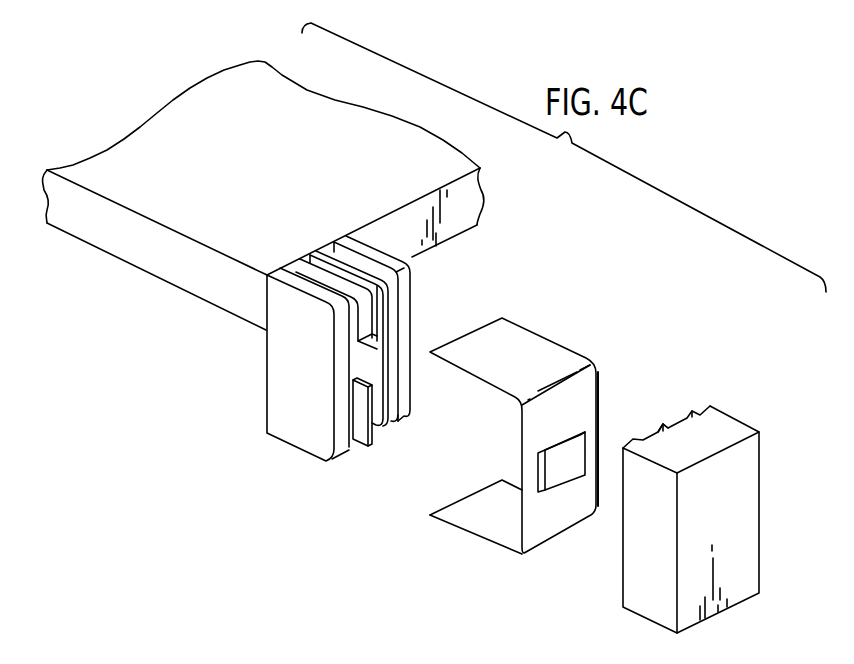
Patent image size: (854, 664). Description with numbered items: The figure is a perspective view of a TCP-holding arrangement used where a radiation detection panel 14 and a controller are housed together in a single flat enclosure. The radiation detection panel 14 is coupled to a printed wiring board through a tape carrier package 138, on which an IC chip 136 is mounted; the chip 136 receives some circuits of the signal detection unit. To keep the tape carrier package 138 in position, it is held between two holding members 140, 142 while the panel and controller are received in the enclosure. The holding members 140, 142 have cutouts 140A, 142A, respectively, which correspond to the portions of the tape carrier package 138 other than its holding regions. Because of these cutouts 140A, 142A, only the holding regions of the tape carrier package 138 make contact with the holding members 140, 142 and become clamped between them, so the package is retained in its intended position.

The radiation detection panel 14 is at (418, 128).
The holding member 140 is at (413, 291).
The cutout 140A is at (393, 365).
The tape carrier package (TCP) 138 is at (543, 334).
The IC chip 136 is at (558, 477).
The holding member 142 is at (727, 410).
The cutout 142A is at (664, 424).